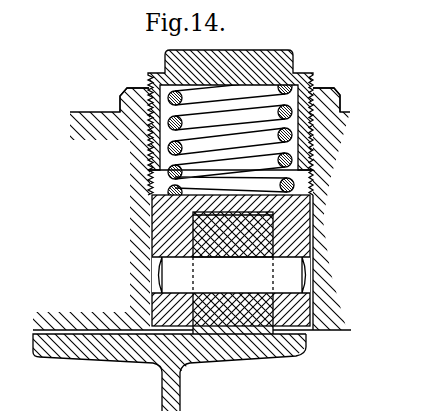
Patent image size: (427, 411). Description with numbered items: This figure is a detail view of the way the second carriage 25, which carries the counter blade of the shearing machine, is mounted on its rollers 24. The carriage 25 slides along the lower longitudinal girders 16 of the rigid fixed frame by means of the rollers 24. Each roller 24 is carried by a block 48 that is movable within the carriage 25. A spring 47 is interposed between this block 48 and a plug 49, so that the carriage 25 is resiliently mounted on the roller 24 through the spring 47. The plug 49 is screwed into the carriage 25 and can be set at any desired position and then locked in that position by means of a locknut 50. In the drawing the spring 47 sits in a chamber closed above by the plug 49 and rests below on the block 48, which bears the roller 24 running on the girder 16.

The plug 49 is at (260, 56).
The locknut 50 is at (128, 92).
The spring 47 is at (170, 181).
The block 48 is at (170, 216).
The second carriage 25 is at (143, 251).
The roller 24 is at (238, 324).
The lower longitudinal girder 16 is at (172, 386).